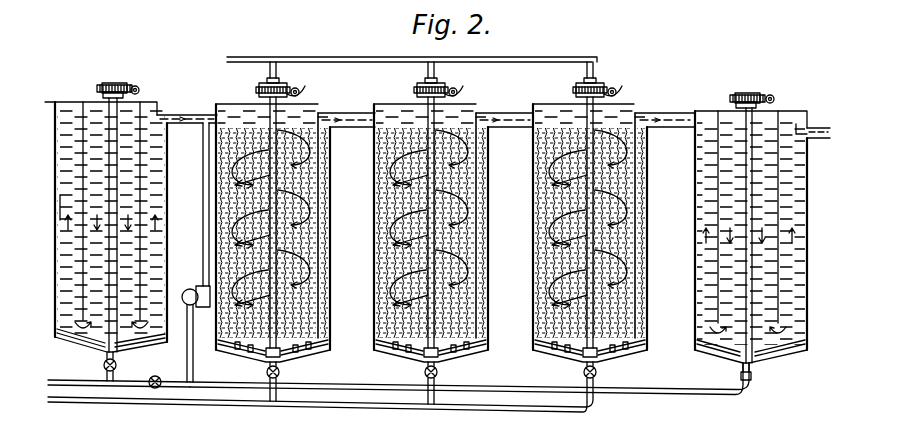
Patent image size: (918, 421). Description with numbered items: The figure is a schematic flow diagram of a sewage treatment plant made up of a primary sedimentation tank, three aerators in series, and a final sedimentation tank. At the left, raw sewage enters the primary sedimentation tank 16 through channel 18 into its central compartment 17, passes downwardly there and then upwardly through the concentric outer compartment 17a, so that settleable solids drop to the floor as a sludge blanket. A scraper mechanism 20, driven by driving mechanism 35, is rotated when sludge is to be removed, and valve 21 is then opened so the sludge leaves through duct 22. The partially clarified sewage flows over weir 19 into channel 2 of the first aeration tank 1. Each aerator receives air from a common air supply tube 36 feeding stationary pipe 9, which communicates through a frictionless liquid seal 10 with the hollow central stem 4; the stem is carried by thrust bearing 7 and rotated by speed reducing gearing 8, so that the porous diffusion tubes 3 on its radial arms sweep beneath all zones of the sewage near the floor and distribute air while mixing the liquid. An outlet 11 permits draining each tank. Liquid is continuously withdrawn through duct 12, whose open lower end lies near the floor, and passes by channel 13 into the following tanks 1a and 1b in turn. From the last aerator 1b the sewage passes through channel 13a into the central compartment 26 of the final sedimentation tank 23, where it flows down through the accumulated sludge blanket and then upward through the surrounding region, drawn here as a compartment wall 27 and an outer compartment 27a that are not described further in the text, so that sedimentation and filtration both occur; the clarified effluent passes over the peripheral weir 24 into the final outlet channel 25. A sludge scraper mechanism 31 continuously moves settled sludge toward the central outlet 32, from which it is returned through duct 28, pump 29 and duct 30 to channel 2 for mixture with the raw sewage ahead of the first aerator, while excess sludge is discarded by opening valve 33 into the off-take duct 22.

The aeration tank 1 is at (335, 192).
The aeration tank 1a is at (492, 206).
The aeration tank 1b is at (651, 215).
The channel 2 is at (191, 115).
The porous diffusion tubes 3 is at (237, 352).
The central stem 4 is at (275, 222).
The thrust bearing 7 is at (298, 92).
The speed reducing gearing 8 is at (260, 86).
The stationary pipe 9 is at (270, 70).
The liquid seal 10 is at (283, 83).
The outlet 11 is at (277, 369).
The duct 12 is at (318, 257).
The channel 13 is at (333, 128).
The channel 13a is at (670, 118).
The primary sedimentation tank 16 is at (56, 193).
The central compartment 17 is at (111, 215).
The outer compartment 17a is at (155, 193).
The channel 18 is at (50, 103).
The weir 19 is at (170, 112).
The scraper mechanism 20 is at (92, 326).
The valve 21 is at (117, 365).
The duct 22 is at (75, 380).
The final sedimentation tank 23 is at (806, 213).
The peripheral weir 24 is at (797, 128).
The final outlet channel 25 is at (818, 121).
The central compartment 26 is at (726, 222).
The baffle plate 27 is at (785, 222).
The down channel 27a is at (711, 298).
The duct 28 is at (670, 390).
The pump 29 is at (190, 289).
The duct 30 is at (204, 170).
The sludge scraper mechanism 31 is at (722, 357).
The central outlet 32 is at (752, 378).
The valve 33 is at (159, 378).
The driving mechanism 35 is at (114, 81).
The air supply tube 36 is at (240, 57).